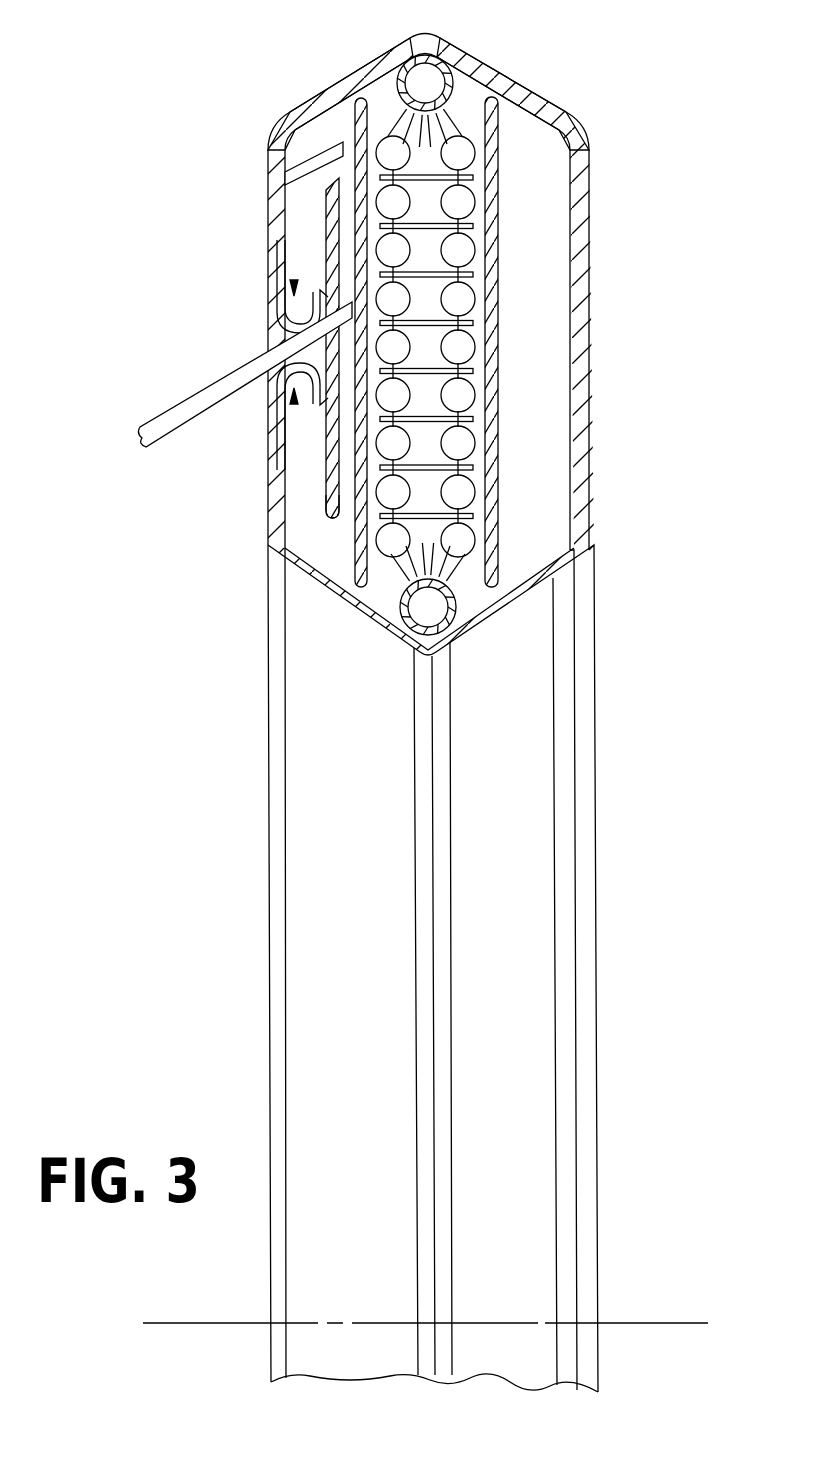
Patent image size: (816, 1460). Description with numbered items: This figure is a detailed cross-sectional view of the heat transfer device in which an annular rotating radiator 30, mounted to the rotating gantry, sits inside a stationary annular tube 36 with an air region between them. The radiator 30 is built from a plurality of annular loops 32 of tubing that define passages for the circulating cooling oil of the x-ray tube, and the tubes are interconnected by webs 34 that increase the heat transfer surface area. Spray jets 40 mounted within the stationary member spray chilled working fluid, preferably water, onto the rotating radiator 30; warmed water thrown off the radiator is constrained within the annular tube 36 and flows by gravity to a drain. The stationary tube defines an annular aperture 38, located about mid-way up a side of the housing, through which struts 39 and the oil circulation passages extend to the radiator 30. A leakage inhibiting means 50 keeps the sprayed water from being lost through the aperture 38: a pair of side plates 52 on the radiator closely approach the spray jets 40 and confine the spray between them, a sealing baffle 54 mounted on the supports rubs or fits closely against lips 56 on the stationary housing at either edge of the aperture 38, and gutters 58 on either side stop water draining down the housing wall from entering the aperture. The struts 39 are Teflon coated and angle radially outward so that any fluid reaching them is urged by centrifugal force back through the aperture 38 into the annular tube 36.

The annular rotating radiator 30 is at (475, 587).
The annular loops of tubing 32 is at (465, 440).
The webs 34 is at (478, 364).
The annular tube 36 is at (590, 192).
The annular aperture 38 is at (260, 333).
The struts 39 is at (188, 405).
The spray jets 40 is at (448, 67).
The leakage inhibiting means 50 is at (302, 471).
The side plates 52 is at (354, 101).
The sealing baffle 54 is at (327, 515).
The lips 56 is at (320, 282).
The gutters 58 is at (293, 278).